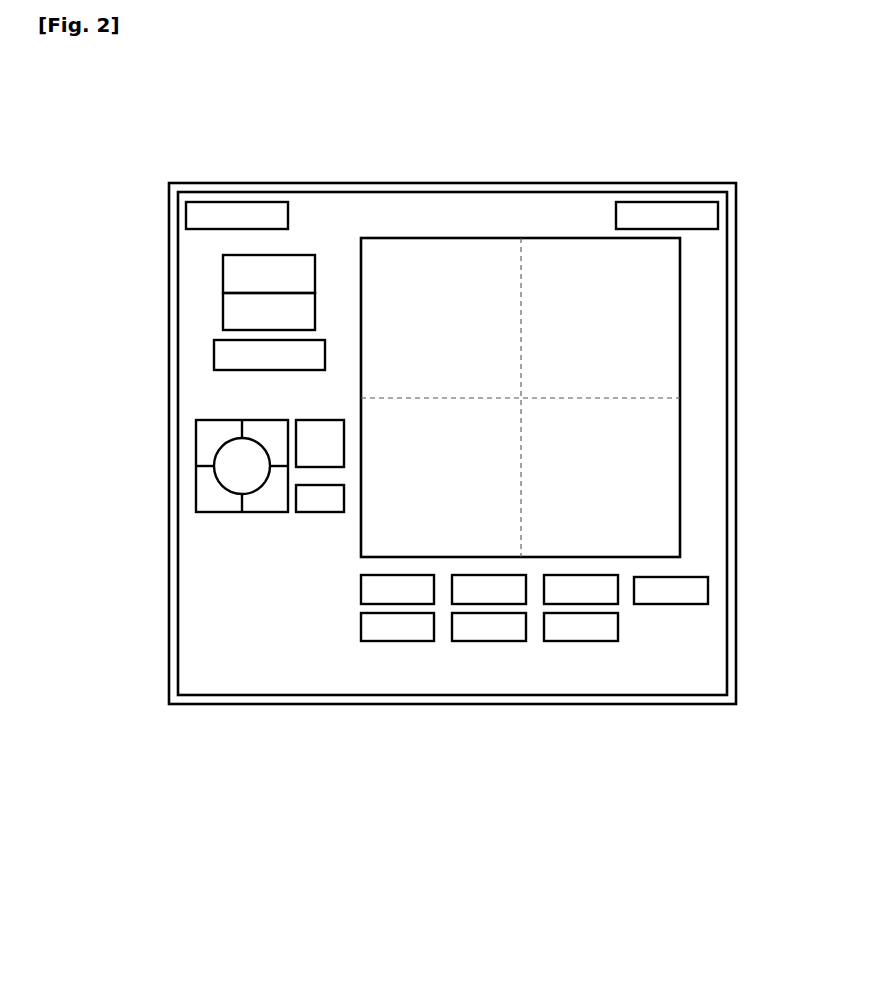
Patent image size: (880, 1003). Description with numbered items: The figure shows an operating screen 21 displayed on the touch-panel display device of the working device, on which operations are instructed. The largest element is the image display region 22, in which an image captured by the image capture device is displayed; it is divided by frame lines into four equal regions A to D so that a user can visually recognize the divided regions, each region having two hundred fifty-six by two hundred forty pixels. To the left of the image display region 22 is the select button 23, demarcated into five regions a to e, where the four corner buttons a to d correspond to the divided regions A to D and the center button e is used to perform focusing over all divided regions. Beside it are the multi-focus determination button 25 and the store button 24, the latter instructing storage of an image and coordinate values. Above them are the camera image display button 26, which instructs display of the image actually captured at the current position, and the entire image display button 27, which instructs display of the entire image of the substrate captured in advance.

The operating screen 21 is at (452, 521).
The image display region 22 is at (520, 315).
The select button 23 is at (183, 466).
The store button 24 is at (211, 511).
The multi-focus determination button 25 is at (211, 422).
The camera image display button 26 is at (196, 274).
The entire image display button 27 is at (196, 311).